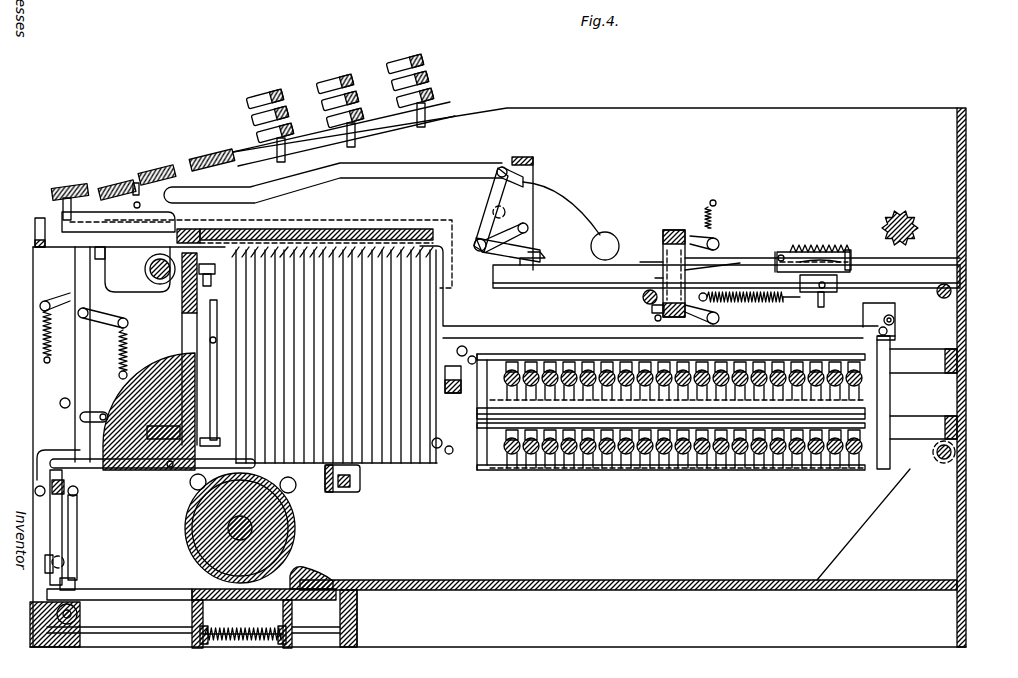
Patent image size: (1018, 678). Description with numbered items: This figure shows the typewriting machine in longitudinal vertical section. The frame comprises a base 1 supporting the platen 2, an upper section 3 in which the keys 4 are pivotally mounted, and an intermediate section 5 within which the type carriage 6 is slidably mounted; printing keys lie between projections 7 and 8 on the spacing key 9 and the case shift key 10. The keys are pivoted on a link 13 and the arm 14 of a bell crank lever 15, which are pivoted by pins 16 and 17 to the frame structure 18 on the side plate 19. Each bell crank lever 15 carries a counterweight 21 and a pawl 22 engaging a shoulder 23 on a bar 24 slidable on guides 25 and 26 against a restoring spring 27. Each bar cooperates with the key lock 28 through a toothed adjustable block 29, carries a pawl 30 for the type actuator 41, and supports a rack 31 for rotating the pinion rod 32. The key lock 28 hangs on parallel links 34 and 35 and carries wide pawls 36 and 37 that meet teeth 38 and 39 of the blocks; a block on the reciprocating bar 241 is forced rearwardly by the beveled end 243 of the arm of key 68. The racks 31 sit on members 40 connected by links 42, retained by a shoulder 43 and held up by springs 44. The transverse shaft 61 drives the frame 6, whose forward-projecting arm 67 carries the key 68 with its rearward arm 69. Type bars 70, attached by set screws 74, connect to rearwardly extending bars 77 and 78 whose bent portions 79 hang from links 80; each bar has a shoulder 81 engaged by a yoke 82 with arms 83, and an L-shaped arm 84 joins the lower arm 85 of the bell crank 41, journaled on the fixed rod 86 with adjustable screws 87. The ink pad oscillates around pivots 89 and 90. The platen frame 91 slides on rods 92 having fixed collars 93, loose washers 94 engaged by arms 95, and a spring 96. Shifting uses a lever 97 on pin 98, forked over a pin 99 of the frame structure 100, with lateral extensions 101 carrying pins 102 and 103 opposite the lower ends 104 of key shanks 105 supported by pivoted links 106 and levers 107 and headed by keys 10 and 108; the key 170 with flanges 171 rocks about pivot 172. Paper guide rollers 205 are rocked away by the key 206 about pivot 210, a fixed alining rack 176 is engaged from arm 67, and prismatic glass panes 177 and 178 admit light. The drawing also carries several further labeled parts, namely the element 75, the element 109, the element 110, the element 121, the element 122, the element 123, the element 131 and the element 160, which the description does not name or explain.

The base 1 is at (772, 580).
The platen 2 is at (296, 533).
The upper section 3 is at (966, 190).
The keys 4 is at (276, 92).
The intermediate section 5 is at (966, 395).
The type carriage 6 is at (182, 338).
The projection 7 is at (252, 147).
The projection 8 is at (374, 120).
The spacing key 9 is at (211, 153).
The case shift key 10 is at (155, 168).
The link 13 is at (528, 222).
The arm 14 is at (504, 166).
The bell crank lever 15 is at (488, 228).
The pin 16 is at (528, 232).
The pin 17 is at (530, 180).
The frame structure 18 is at (535, 160).
The side plate 19 is at (782, 108).
The counterweight 21 is at (608, 232).
The pawl 22 is at (488, 252).
The shoulder 23 is at (530, 262).
The bar 24 is at (593, 278).
The guide 25 is at (643, 297).
The guide 26 is at (952, 293).
The restoring spring 27 is at (762, 300).
The key lock 28 is at (674, 230).
The toothed adjustable block 29 is at (700, 270).
The pawl 30 is at (830, 306).
The rack 31 is at (812, 246).
The pinion rod 32 is at (902, 210).
The parallel link 34 is at (715, 238).
The parallel link 35 is at (719, 316).
The wide pawl 36 is at (663, 248).
The wide pawl 37 is at (652, 310).
The tooth 38 is at (641, 257).
The tooth 39 is at (651, 274).
The member 40 is at (777, 264).
The type actuator 41 is at (870, 314).
The link 42 is at (790, 250).
The shoulder 43 is at (778, 252).
The spring 44 is at (835, 250).
The transverse shaft 61 is at (149, 269).
The forward-projecting arm 67 is at (105, 270).
The key 68 is at (60, 188).
The rearward arm 69 is at (95, 252).
The type carrying bar 70 is at (445, 314).
The set screw 74 is at (405, 466).
The bolt 75 is at (35, 232).
The rearwardly extending bar 77 is at (520, 354).
The rearwardly extending bar 78 is at (490, 408).
The bent portion 79 is at (478, 352).
The link 80 is at (464, 346).
The shoulder 81 is at (552, 362).
The yoke 82 is at (606, 362).
The arm 83 is at (550, 470).
The L-shaped arm 84 is at (890, 406).
The lower arm 85 is at (892, 333).
The fixed rod 86 is at (895, 321).
The adjustable screw 87 is at (893, 314).
The pivot 89 is at (200, 438).
The pivot 90 is at (218, 392).
The platen frame 91 is at (200, 586).
The rod 92 is at (160, 636).
The fixed collar 93 is at (202, 645).
The loose washer 94 is at (280, 626).
The arm 95 is at (192, 610).
The spring 96 is at (243, 642).
The lever 97 is at (77, 536).
The pin 98 is at (50, 505).
The pin 99 is at (48, 560).
The frame structure 100 is at (108, 589).
The lateral extension 101 is at (80, 488).
The pin 102 is at (22, 487).
The pin 103 is at (80, 495).
The lower end 104 is at (37, 460).
The key shank 105 is at (80, 370).
The pivoted link 106 is at (70, 400).
The lever 107 is at (70, 297).
The head 108 is at (108, 183).
The block 109 is at (348, 488).
The block 110 is at (360, 482).
The block 121 is at (75, 590).
The lever 122 is at (85, 630).
The pivot 123 is at (66, 648).
The pin 131 is at (333, 494).
The roller 160 is at (955, 452).
The key 170 is at (132, 218).
The flange 171 is at (134, 182).
The pivot 172 is at (148, 211).
The fixed alining rack 176 is at (278, 245).
The prismatic glass pane 177 is at (160, 470).
The prismatic glass pane 178 is at (340, 229).
The paper guide roller 205 is at (192, 490).
The key 206 is at (148, 429).
The pivot 210 is at (478, 375).
The reciprocating bar 241 is at (402, 229).
The beveled end 243 is at (200, 207).